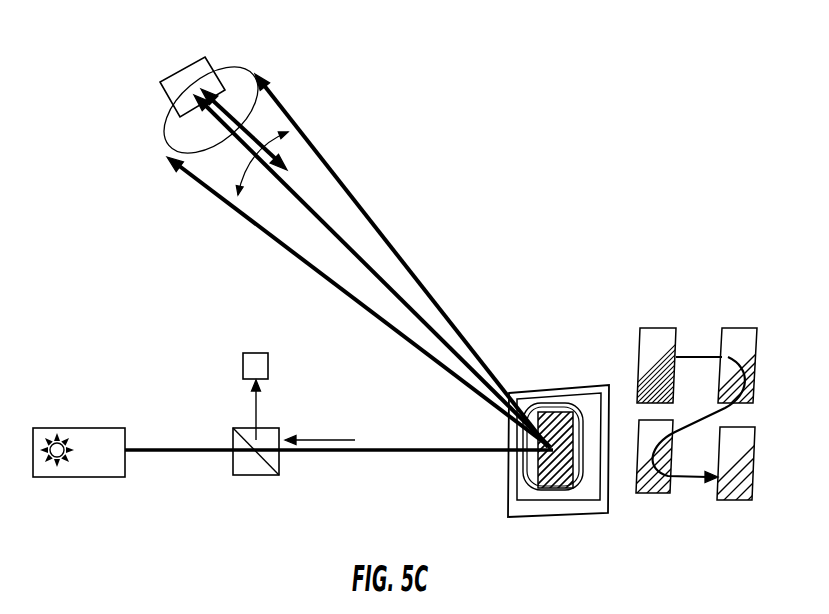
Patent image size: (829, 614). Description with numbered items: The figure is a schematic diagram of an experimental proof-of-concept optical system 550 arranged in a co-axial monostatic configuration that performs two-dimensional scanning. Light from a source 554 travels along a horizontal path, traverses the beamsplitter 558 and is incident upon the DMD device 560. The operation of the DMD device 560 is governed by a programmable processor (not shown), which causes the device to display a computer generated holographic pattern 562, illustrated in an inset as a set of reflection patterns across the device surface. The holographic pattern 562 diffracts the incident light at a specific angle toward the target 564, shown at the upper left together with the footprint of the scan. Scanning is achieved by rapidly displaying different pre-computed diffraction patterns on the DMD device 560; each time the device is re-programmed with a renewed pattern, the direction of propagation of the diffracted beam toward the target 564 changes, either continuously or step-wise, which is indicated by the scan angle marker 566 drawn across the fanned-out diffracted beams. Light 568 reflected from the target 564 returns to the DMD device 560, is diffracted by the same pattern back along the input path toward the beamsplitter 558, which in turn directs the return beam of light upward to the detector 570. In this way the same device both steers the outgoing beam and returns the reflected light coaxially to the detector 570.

The optical system 550 is at (519, 217).
The source 554 is at (79, 452).
The beamsplitter 558 is at (280, 482).
The DMD device 560 is at (556, 480).
The holographic pattern 562 is at (714, 381).
The target 564 is at (181, 69).
The scan angle 566 is at (254, 176).
The reflected light 568 is at (277, 104).
The detector 570 is at (304, 396).